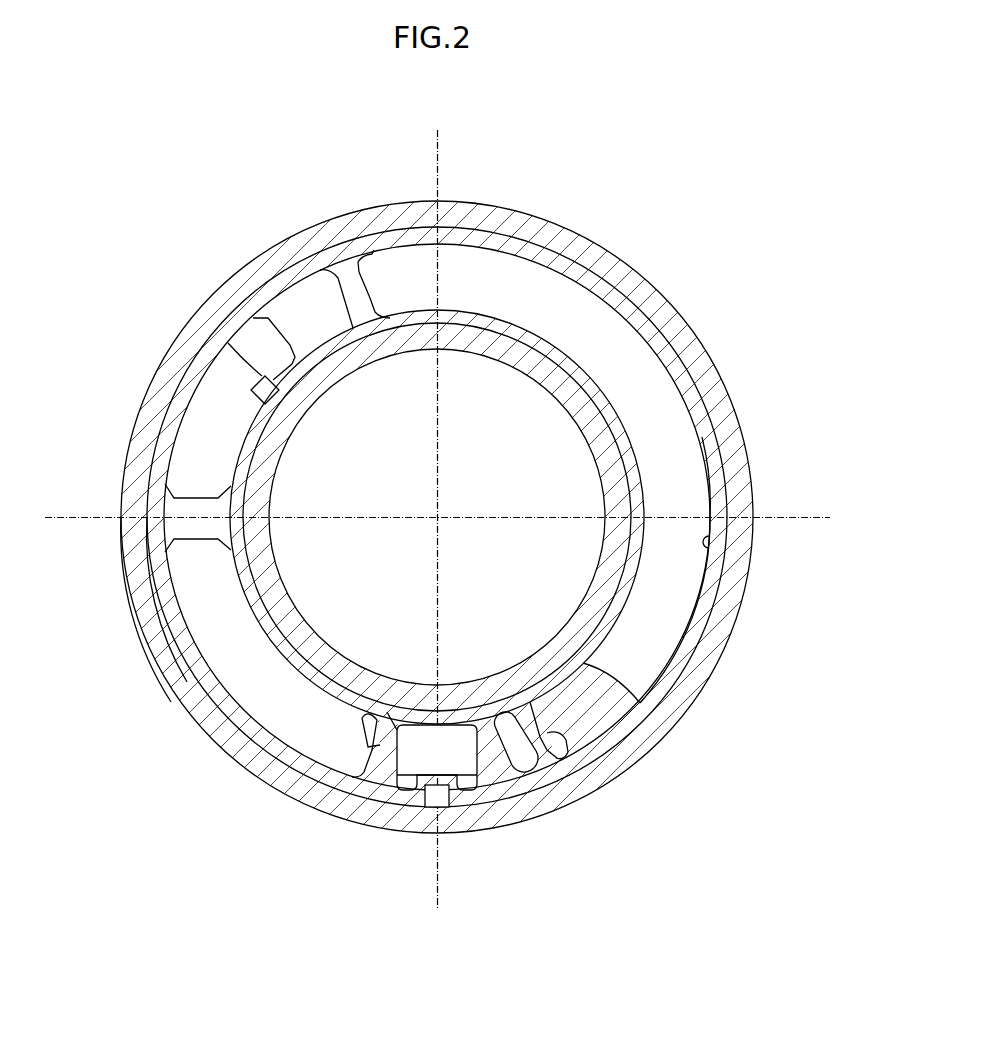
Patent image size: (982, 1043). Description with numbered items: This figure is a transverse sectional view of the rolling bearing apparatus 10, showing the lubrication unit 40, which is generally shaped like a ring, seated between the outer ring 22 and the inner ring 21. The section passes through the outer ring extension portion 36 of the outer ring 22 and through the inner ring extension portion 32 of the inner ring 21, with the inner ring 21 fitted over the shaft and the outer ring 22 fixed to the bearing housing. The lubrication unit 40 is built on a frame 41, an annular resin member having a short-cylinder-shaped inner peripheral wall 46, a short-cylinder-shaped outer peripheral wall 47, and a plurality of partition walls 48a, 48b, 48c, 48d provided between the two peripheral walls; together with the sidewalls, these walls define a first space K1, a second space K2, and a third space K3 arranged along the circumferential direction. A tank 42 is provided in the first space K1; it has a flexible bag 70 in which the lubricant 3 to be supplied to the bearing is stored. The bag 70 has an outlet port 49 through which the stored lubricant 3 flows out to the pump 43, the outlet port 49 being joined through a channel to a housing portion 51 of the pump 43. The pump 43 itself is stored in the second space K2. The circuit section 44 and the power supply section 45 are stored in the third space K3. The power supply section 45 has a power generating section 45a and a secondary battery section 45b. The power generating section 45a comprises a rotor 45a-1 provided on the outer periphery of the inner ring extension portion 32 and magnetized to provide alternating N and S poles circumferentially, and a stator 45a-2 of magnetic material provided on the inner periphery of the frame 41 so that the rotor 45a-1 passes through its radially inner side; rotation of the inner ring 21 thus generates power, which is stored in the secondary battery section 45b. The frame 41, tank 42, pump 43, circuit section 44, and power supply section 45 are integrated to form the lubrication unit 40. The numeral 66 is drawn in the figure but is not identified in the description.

The rolling bearing apparatus 10 is at (636, 268).
The lubrication unit 40 is at (515, 240).
The tank 42 is at (660, 415).
The outer ring extension portion 36 is at (150, 610).
The outer ring 22 is at (157, 686).
The lubricant 3 is at (591, 351).
The first space K1 is at (702, 437).
The outer peripheral wall 47 is at (680, 653).
The bag 70 is at (707, 547).
The inner ring extension portion 32 is at (300, 602).
The boss portion 66 is at (213, 605).
The inner ring 21 is at (322, 636).
The frame 41 is at (350, 283).
The partition wall 48b is at (359, 262).
The rotor 45a-1 is at (206, 346).
The stator 45a-2 is at (274, 398).
The power generating section 45a is at (233, 382).
The power supply section 45 is at (202, 415).
The secondary battery section 45b is at (187, 470).
The third space K3 is at (178, 528).
The circuit section 44 is at (255, 690).
The partition wall 48c is at (385, 722).
The pump 43 is at (397, 760).
The housing portion 51 is at (425, 802).
The second space K2 is at (465, 787).
The outlet port 49 is at (530, 787).
The partition wall 48d is at (506, 722).
The partition wall 48a is at (548, 740).
The inner peripheral wall 46 is at (582, 666).